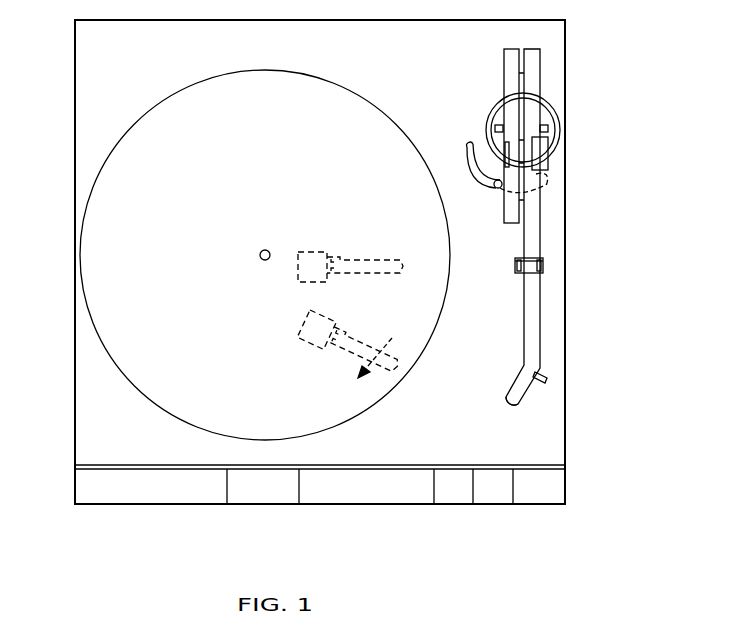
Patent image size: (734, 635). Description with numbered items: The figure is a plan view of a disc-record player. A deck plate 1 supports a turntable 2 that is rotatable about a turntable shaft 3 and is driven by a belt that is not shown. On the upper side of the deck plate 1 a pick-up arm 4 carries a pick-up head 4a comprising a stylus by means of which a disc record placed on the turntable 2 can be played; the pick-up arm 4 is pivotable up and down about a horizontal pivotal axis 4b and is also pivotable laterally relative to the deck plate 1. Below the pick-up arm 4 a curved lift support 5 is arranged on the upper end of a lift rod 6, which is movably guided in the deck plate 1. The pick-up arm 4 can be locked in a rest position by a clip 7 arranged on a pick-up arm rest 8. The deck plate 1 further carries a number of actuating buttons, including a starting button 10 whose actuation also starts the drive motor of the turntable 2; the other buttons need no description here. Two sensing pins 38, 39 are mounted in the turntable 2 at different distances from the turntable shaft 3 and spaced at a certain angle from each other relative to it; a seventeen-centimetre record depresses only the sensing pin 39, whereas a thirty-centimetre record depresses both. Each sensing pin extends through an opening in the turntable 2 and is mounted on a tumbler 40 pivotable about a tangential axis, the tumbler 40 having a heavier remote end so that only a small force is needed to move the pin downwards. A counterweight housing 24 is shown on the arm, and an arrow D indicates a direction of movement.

The deck plate 1 is at (75, 103).
The turntable 2 is at (108, 222).
The turntable shaft 3 is at (266, 260).
The pick-up arm 4 is at (532, 332).
The pick-up head 4a is at (520, 393).
The horizontal pivotal axis 4b is at (500, 124).
The curved lift support 5 is at (475, 165).
The lift rod 6 is at (495, 193).
The clip 7 is at (543, 265).
The pick-up arm rest 8 is at (540, 256).
The starting button 10 is at (495, 493).
The counterweight housing 24 is at (545, 118).
The sensing pin 38 is at (386, 356).
The sensing pin 39 is at (403, 267).
The tumbler 40 is at (375, 259).
The direction of movement D is at (393, 339).